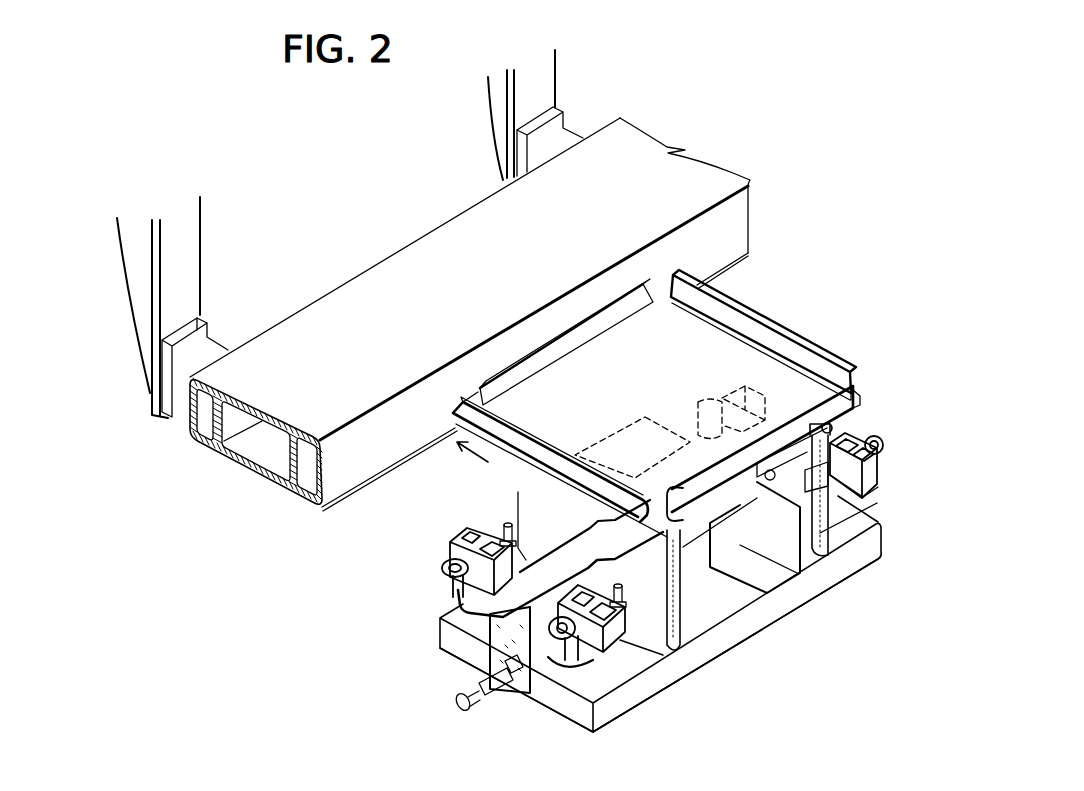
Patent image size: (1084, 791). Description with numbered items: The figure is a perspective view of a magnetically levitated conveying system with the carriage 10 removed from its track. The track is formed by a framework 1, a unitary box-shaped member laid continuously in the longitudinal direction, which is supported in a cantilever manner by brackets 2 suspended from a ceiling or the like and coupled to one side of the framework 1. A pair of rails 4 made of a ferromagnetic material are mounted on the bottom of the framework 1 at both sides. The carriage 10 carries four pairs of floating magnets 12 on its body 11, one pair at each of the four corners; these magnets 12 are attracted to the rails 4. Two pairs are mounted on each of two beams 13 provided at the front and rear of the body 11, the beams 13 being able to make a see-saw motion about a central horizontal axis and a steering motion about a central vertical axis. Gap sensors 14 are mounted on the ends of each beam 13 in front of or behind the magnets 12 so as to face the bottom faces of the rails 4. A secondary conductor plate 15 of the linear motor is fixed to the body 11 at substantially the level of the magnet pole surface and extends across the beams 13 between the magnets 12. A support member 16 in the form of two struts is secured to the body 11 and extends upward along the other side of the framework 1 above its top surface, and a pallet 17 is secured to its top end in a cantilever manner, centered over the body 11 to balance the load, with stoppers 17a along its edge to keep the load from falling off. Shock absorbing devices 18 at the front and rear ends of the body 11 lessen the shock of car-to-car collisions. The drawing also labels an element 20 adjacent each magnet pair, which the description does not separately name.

The framework 1 is at (461, 332).
The brackets 2 is at (138, 275).
The rails 4 is at (202, 445).
The carriage 10 is at (742, 658).
The body 11 is at (650, 690).
The floating magnets 12 is at (480, 522).
The beams 13 is at (541, 677).
The gap sensors 14 is at (698, 405).
The secondary conductor plate 15 is at (493, 595).
The support member 16 is at (680, 607).
The pallet 17 is at (656, 403).
The stoppers 17a is at (810, 405).
The shock absorbing devices 18 is at (495, 690).
The cylindrical connectors 20 is at (443, 563).